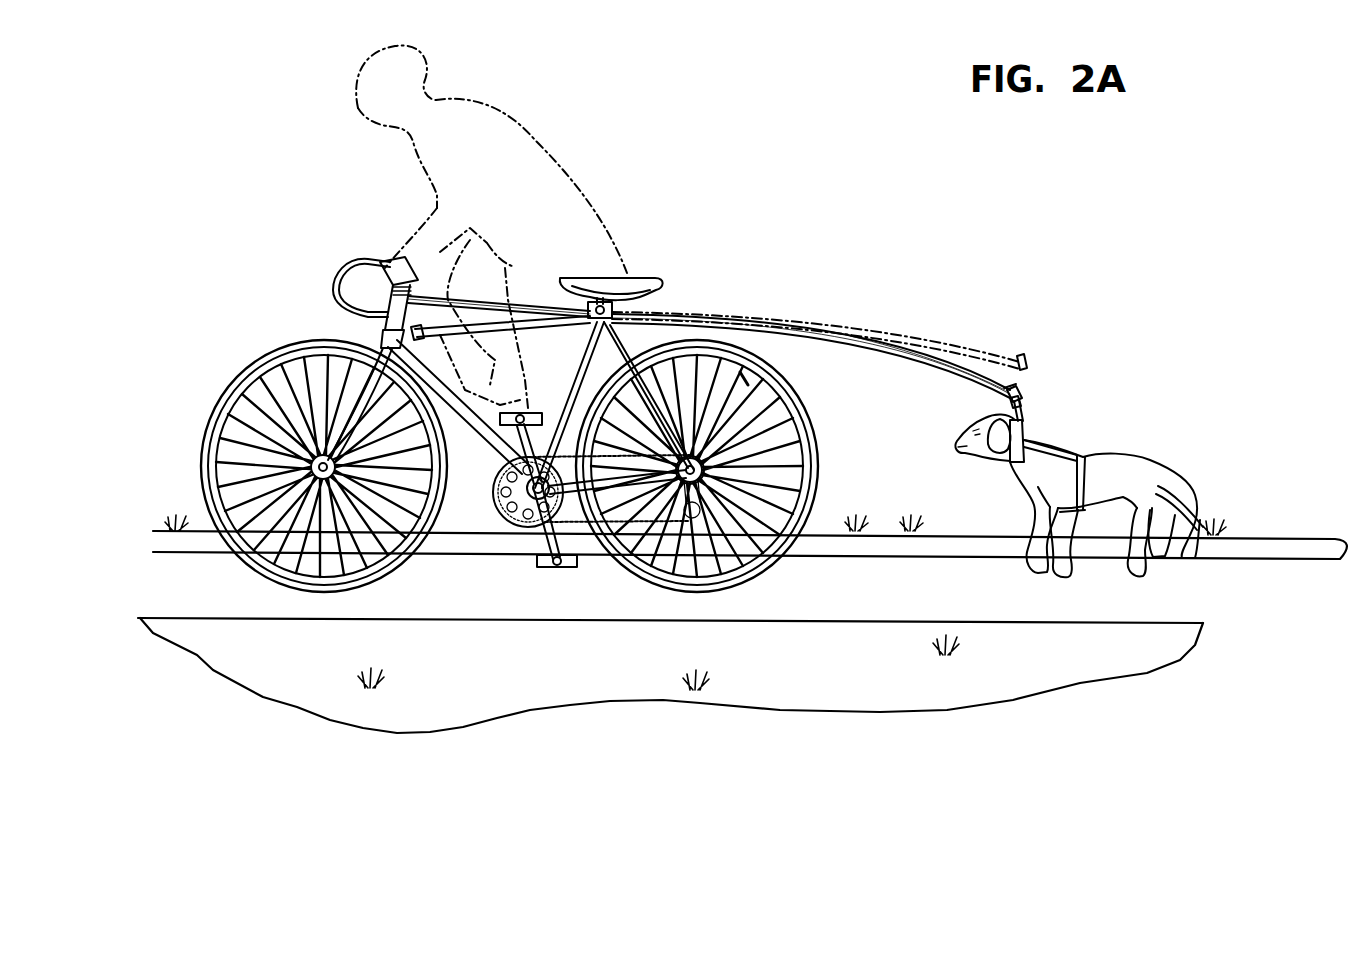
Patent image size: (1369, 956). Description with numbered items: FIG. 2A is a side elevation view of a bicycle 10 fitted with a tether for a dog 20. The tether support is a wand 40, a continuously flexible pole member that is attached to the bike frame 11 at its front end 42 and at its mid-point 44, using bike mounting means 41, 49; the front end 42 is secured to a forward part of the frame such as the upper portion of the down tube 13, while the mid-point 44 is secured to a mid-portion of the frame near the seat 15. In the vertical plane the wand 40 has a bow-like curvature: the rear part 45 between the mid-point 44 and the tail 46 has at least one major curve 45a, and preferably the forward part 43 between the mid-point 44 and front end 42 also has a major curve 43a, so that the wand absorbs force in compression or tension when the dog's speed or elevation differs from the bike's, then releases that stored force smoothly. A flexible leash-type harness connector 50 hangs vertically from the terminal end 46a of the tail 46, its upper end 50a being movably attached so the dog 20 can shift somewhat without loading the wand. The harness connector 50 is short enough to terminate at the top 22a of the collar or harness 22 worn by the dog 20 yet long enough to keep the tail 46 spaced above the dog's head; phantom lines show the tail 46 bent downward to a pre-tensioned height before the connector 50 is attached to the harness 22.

The bicycle 10 is at (298, 322).
The bike frame 11 is at (343, 280).
The down tube 13 is at (432, 373).
The seat 15 is at (667, 320).
The dog 20 is at (1120, 470).
The collar or harness 22 is at (1058, 458).
The top of collar or harness 22a is at (1030, 438).
The wand 40 is at (729, 276).
The bike mounting means 41 is at (416, 330).
The front end 42 is at (400, 278).
The forward part of the wand 43 is at (536, 304).
The major curve 43a is at (508, 262).
The mid-point 44 is at (657, 320).
The rear part of the wand 45 is at (862, 345).
The major curve 45a is at (893, 337).
The tail 46 is at (915, 352).
The terminal end of tail 46a is at (1008, 388).
The bike mounting means 49 is at (602, 303).
The harness connector 50 is at (1030, 420).
The upper end of harness connector 50a is at (1026, 408).